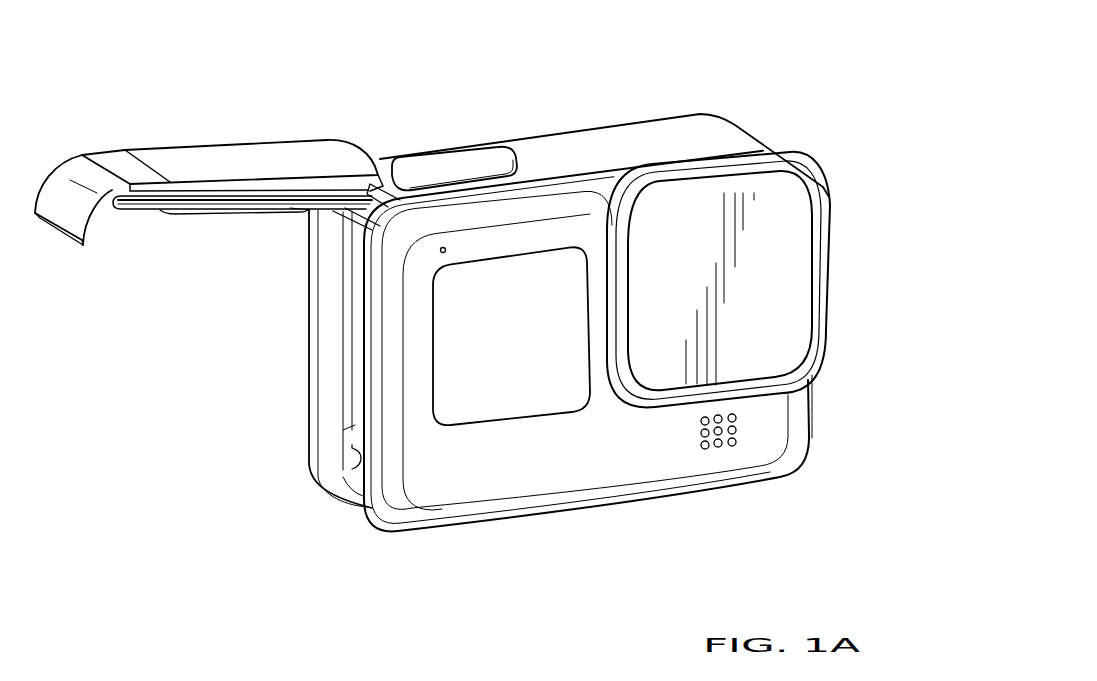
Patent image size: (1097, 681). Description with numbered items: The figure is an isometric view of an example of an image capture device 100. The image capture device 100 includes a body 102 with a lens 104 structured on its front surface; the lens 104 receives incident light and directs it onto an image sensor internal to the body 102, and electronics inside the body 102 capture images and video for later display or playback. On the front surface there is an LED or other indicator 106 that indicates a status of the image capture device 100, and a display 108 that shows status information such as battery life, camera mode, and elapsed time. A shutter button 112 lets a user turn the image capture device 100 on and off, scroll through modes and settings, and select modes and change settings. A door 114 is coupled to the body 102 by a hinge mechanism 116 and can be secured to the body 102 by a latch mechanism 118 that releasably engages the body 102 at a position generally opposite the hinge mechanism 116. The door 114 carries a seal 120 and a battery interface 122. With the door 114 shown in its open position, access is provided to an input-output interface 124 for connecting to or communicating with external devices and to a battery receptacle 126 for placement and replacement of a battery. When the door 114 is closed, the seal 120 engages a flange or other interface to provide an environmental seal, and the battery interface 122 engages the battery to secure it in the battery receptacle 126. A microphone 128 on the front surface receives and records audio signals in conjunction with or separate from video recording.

The image capture device 100 is at (792, 48).
The body 102 is at (623, 133).
The lens 104 is at (790, 283).
The indicator 106 is at (441, 251).
The display 108 is at (513, 400).
The shutter button 112 is at (407, 162).
The door 114 is at (260, 157).
The hinge mechanism 116 is at (383, 192).
The latch mechanism 118 is at (62, 192).
The seal 120 is at (148, 211).
The battery interface 122 is at (205, 212).
The input-output (I/O) interface 124 is at (352, 458).
The battery receptacle 126 is at (356, 239).
The microphone 128 is at (718, 448).